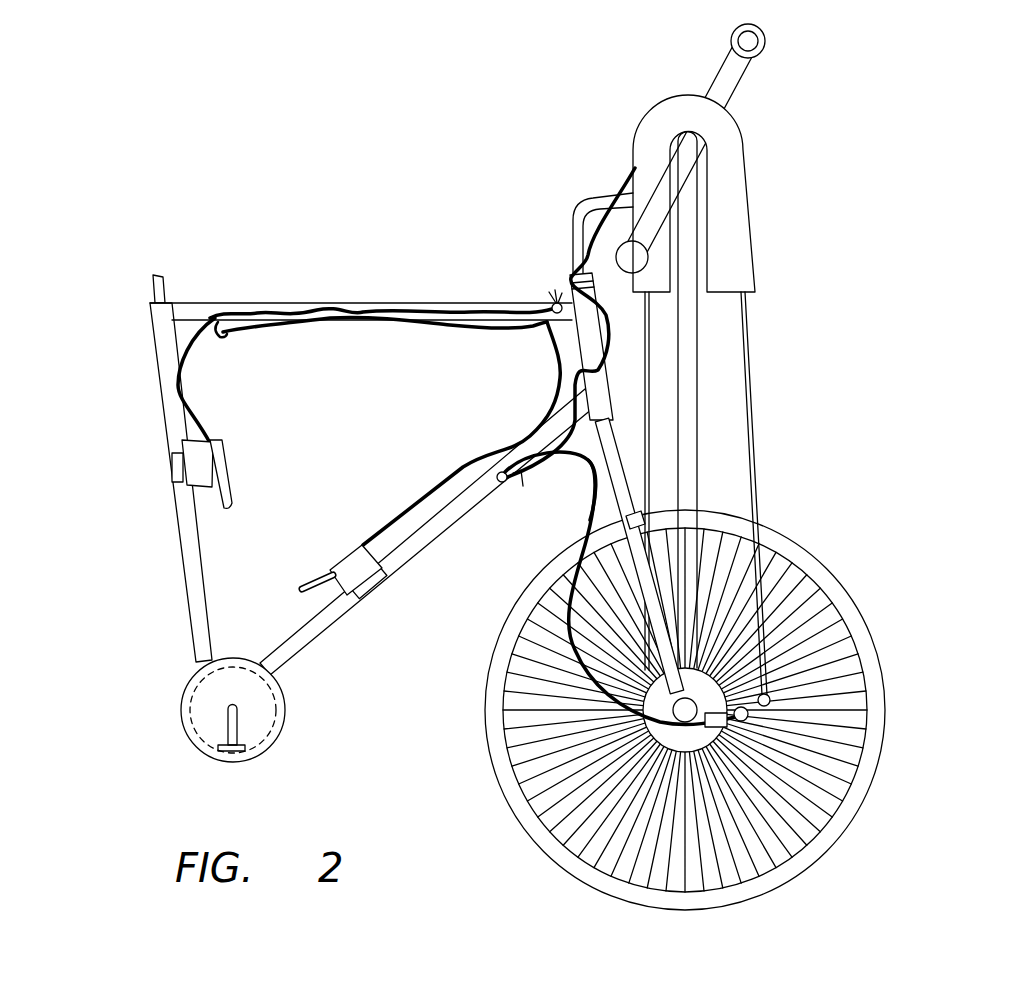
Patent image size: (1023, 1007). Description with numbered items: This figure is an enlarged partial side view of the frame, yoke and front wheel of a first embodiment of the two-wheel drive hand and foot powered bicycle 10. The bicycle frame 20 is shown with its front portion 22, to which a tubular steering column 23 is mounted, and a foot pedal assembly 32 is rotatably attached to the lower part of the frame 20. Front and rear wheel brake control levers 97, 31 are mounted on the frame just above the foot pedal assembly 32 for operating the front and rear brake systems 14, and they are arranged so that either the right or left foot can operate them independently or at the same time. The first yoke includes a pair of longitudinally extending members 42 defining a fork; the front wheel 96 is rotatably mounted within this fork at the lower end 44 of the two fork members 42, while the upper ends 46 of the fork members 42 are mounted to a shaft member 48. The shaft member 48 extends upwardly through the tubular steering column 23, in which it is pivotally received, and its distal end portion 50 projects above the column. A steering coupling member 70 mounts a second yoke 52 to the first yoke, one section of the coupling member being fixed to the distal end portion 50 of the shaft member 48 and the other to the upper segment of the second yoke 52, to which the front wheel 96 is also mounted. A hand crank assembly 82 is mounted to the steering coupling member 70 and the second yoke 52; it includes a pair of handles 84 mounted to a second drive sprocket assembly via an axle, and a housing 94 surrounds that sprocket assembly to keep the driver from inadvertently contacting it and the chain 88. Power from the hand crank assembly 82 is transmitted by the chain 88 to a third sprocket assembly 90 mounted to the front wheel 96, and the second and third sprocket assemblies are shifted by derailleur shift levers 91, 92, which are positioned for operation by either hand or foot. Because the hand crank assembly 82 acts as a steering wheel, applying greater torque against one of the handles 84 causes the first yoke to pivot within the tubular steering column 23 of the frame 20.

The bicycle 10 is at (222, 219).
The brake systems 14 is at (655, 510).
The bicycle frame 20 is at (257, 303).
The front portion of the frame 22 is at (577, 311).
The tubular steering column 23 is at (612, 362).
The rear wheel brake control lever 31 is at (332, 568).
The foot pedal assembly 32 is at (191, 727).
The longitudinally extending members 42 is at (633, 580).
The lower end of the fork members 44 is at (645, 712).
The upper ends of the fork members 46 is at (613, 515).
The shaft member 48 is at (580, 440).
The distal end portion of the shaft member 50 is at (573, 243).
The second yoke 52 is at (697, 399).
The steering coupling member 70 is at (602, 197).
The hand crank assembly 82 is at (737, 84).
The handles 84 is at (763, 42).
The chain 88 is at (752, 368).
The third sprocket assembly 90 is at (738, 704).
The derailleur shift lever 91 is at (517, 477).
The derailleur shift lever 92 is at (502, 485).
The housing 94 is at (652, 105).
The front wheel 96 is at (856, 601).
The front wheel brake control lever 97 is at (218, 473).